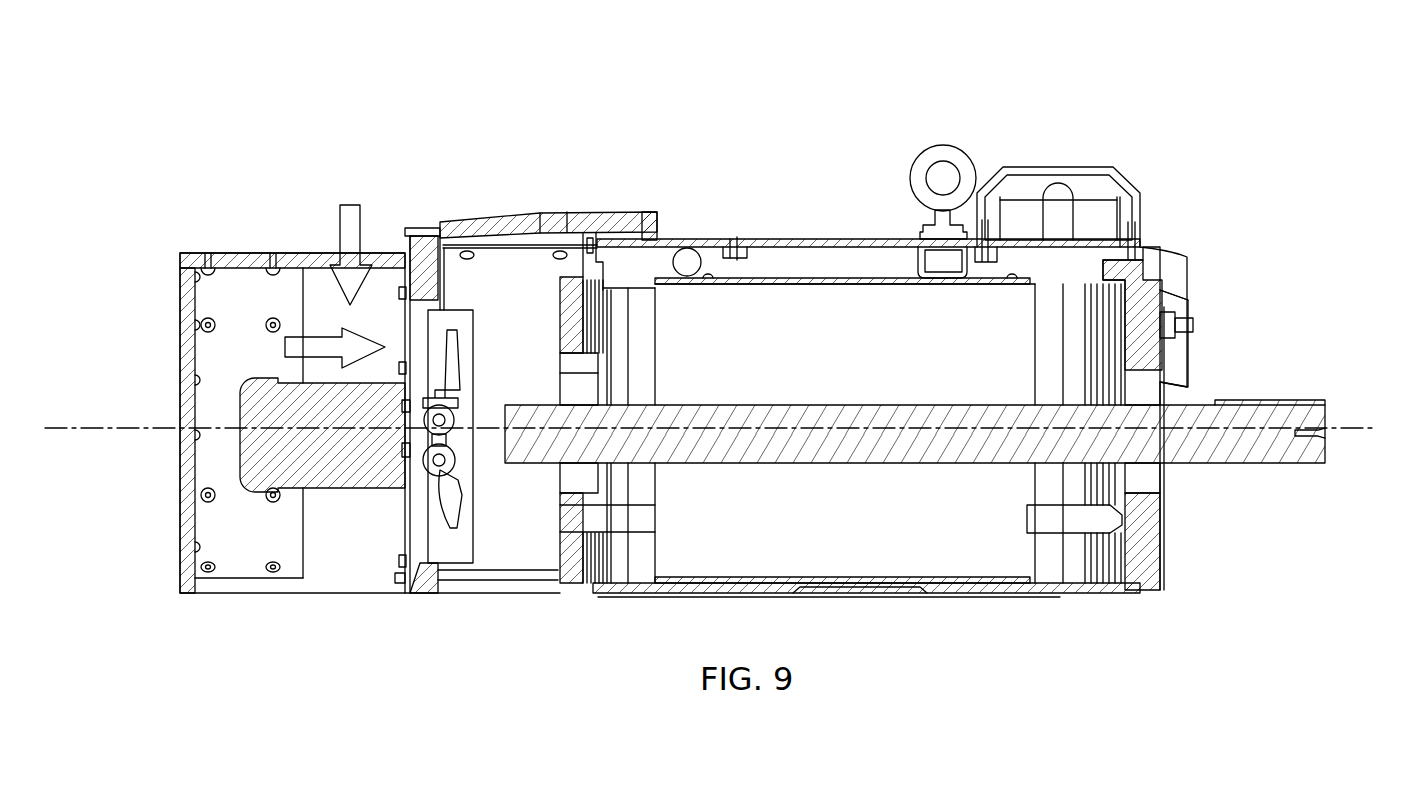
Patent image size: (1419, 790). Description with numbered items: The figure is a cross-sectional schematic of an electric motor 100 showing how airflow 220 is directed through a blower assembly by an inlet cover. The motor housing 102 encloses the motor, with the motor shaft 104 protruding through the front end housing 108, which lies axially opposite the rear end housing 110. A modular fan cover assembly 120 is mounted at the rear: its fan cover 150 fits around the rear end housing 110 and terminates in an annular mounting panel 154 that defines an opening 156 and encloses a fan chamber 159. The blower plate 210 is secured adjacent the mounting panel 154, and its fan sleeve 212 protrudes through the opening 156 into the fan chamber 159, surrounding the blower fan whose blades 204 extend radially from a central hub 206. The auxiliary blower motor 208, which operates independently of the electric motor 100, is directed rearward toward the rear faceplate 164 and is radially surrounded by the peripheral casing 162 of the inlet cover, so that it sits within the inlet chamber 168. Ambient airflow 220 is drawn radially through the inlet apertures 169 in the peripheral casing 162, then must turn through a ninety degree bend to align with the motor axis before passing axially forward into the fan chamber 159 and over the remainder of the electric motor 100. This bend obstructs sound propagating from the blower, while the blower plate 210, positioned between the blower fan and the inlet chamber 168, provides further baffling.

The electric motor 100 is at (774, 133).
The motor housing 102 is at (850, 239).
The motor shaft 104 is at (1255, 464).
The front end housing 108 is at (1156, 321).
The rear end housing 110 is at (570, 278).
The fan cover assembly 120 is at (640, 172).
The fan cover 150 is at (527, 210).
The mounting panel 154 is at (430, 243).
The opening 156 is at (437, 283).
The fan chamber 159 is at (524, 532).
The peripheral casing 162 is at (240, 253).
The rear faceplate 164 is at (183, 328).
The inlet chamber 168 is at (240, 545).
The inlet apertures 169 is at (307, 252).
The blades 204 is at (460, 350).
The central hub 206 is at (455, 458).
The blower motor 208 is at (340, 480).
The blower plate 210 is at (405, 548).
The fan sleeve 212 is at (478, 540).
The airflow 220 is at (352, 205).